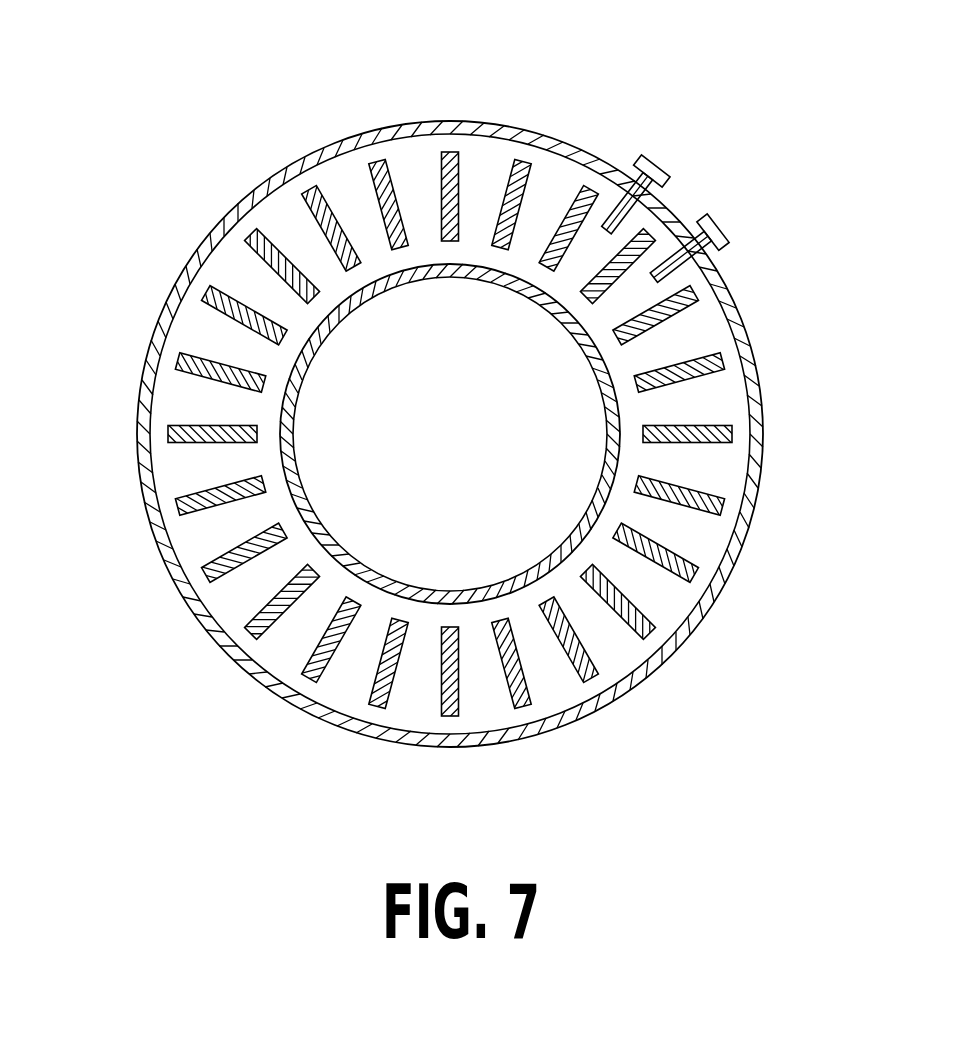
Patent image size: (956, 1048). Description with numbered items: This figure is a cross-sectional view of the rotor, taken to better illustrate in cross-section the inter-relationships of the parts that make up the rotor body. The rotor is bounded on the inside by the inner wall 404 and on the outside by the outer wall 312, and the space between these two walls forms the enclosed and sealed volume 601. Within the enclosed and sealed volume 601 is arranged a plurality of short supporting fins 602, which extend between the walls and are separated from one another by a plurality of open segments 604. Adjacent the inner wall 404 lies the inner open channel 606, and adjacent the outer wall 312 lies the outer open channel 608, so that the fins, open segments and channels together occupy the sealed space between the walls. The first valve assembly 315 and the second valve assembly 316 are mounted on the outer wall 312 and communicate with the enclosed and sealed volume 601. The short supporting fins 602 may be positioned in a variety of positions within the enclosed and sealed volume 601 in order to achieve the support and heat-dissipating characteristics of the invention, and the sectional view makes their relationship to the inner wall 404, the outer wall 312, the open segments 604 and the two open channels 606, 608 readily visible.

The outer wall 312 is at (158, 527).
The inner wall 404 is at (317, 540).
The enclosed and sealed volume 601 is at (416, 165).
The plurality of short supporting fins 602 is at (522, 742).
The plurality of open segments 604 is at (685, 343).
The inner open channel 606 is at (272, 386).
The outer open channel 608 is at (163, 436).
The first valve assembly 315 is at (660, 158).
The second valve assembly 316 is at (710, 240).